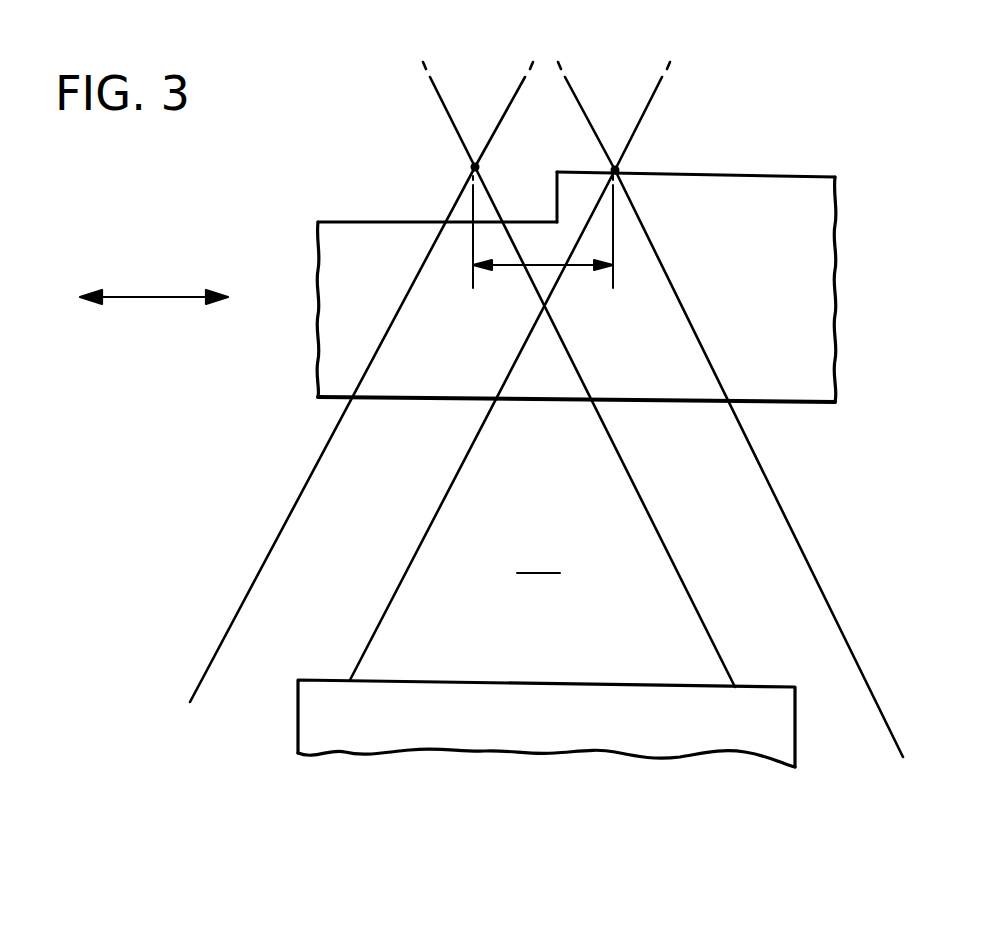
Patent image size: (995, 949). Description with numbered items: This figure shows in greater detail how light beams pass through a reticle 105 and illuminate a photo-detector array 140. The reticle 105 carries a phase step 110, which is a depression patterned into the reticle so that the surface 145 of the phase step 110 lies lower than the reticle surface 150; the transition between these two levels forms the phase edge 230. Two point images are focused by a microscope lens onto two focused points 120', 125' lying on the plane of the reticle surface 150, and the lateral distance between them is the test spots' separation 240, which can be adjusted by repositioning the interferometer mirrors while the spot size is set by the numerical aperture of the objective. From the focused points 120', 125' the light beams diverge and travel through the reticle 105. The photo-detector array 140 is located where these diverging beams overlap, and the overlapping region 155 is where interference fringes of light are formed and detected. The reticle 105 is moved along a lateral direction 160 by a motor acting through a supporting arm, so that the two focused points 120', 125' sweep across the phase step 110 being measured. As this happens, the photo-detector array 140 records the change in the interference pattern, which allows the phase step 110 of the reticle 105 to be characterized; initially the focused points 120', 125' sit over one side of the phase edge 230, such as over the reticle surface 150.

The reticle 105 is at (338, 326).
The phase step 110 is at (380, 162).
The focused point 120' is at (421, 131).
The focused point 125' is at (676, 135).
The photo-detector array 140 is at (322, 717).
The surface of the phase step 145 is at (354, 222).
The reticle surface 150 is at (790, 176).
The overlapping region 155 is at (538, 554).
The lateral direction 160 is at (156, 297).
The phase edge 230 is at (557, 197).
The test spots' separation 240 is at (578, 268).